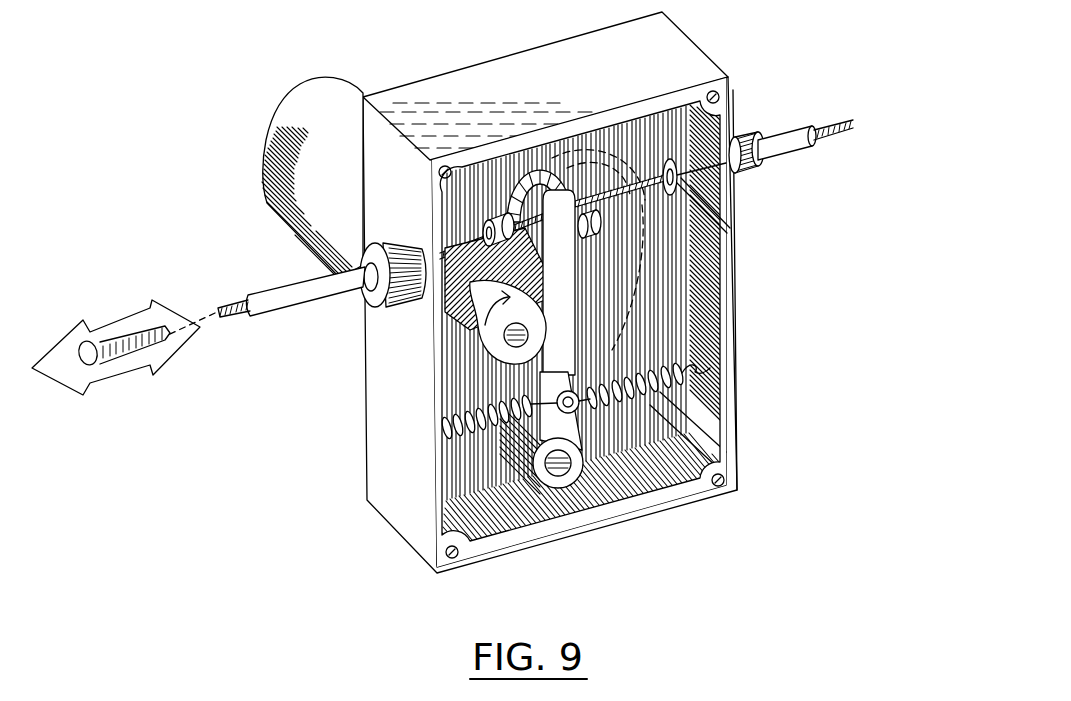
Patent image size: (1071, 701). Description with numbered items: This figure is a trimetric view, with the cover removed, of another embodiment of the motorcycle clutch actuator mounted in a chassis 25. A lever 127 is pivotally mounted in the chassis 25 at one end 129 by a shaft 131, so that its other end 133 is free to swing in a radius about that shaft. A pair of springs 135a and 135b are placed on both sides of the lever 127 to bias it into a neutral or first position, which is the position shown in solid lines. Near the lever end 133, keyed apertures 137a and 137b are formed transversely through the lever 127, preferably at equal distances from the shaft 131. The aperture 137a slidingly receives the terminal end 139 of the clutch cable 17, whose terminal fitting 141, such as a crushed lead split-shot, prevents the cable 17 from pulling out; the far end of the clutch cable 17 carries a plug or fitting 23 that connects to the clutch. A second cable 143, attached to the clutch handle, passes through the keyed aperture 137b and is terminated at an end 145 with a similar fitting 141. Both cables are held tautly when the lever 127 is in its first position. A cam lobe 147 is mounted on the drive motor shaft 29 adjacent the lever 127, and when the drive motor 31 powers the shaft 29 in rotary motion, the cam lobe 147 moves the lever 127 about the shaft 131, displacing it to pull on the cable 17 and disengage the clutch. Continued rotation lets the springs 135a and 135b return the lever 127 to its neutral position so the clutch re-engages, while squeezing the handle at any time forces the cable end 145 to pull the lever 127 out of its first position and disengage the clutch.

The clutch cable 17 is at (240, 322).
The plug or fitting 23 is at (95, 340).
The chassis 25 is at (713, 62).
The drive motor shaft 29 is at (507, 343).
The drive motor 31 is at (277, 130).
The lever 127 is at (567, 318).
The lever end 129 is at (575, 437).
The shaft 131 is at (563, 478).
The lever end 133 is at (548, 168).
The spring 135a is at (455, 440).
The spring 135b is at (678, 376).
The keyed aperture 137a is at (448, 253).
The keyed aperture 137b is at (512, 147).
The terminal end 139 is at (600, 205).
The terminal fitting 141 is at (492, 222).
The second cable 143 is at (827, 123).
The terminal end 145 is at (437, 174).
The cam lobe 147 is at (432, 302).